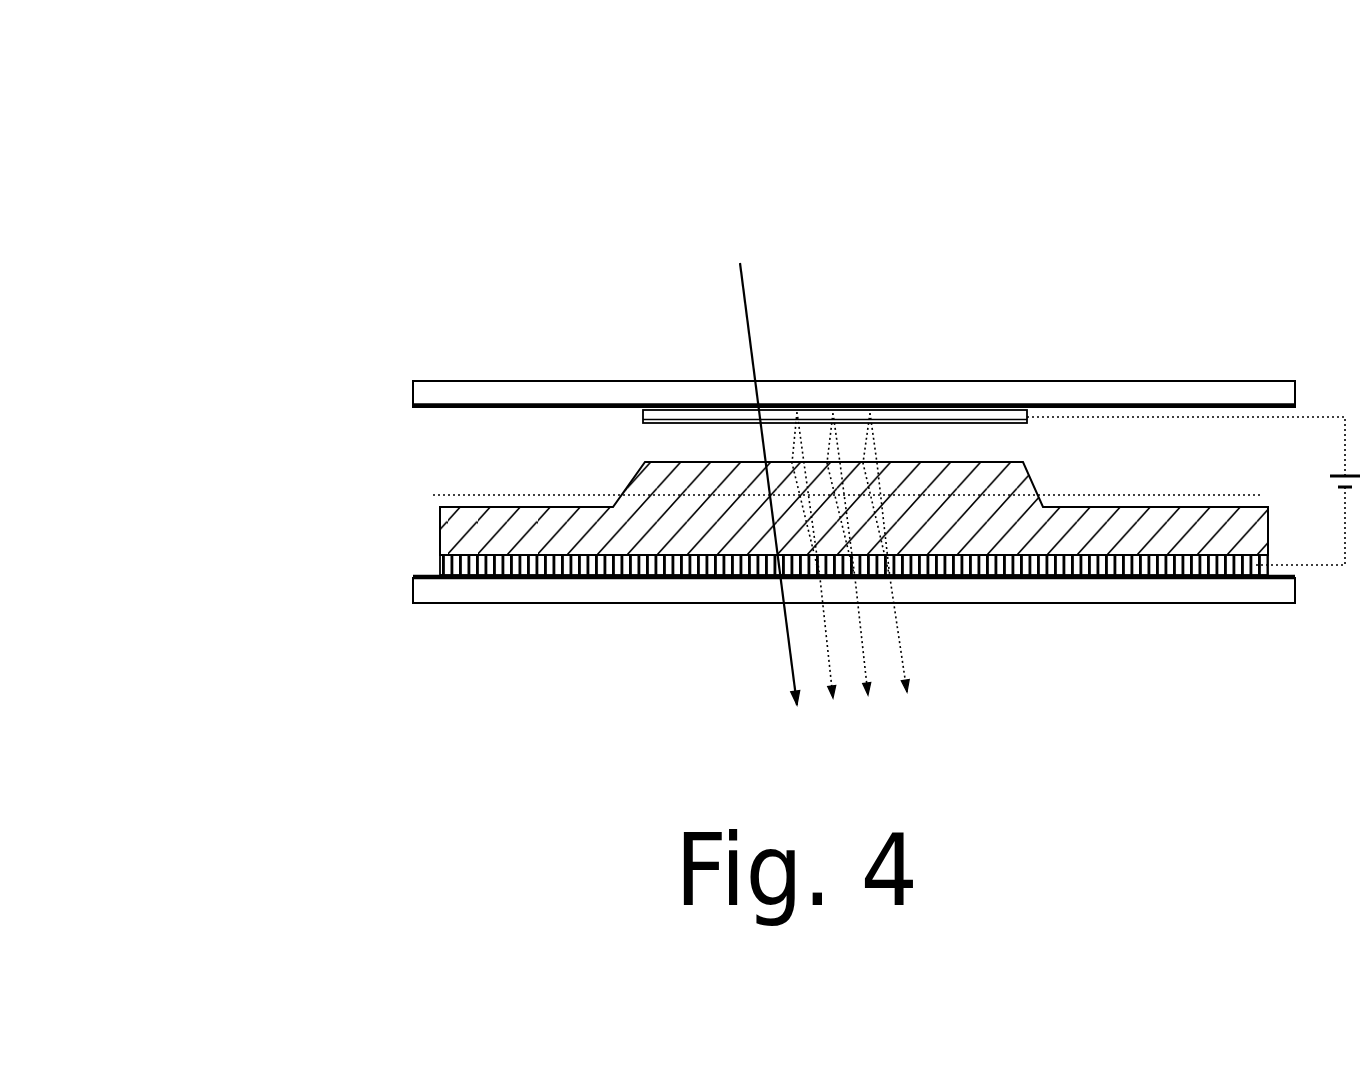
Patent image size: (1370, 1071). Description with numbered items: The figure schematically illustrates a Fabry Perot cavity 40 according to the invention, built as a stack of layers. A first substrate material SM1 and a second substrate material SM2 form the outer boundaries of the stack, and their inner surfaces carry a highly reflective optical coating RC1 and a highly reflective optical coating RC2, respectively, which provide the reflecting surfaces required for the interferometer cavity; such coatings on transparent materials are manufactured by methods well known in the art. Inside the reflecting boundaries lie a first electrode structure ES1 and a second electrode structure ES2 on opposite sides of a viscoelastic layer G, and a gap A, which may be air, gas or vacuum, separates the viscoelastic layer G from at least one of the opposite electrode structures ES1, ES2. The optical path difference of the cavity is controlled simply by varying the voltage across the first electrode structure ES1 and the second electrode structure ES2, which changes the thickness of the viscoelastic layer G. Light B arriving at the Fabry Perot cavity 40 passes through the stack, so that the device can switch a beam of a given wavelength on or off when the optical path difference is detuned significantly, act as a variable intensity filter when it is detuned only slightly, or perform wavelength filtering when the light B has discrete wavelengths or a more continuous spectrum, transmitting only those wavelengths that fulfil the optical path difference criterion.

The Fabry Perot cavity 40 is at (307, 178).
The second substrate material SM2 is at (643, 392).
The highly reflective optical coating RC2 is at (520, 400).
The second electrode structure ES2 is at (1000, 413).
The gap A is at (448, 447).
The viscoelastic layer G is at (475, 533).
The first electrode structure ES1 is at (443, 565).
The highly reflective optical coating RC1 is at (572, 577).
The first substrate material SM1 is at (427, 592).
The light B is at (817, 459).